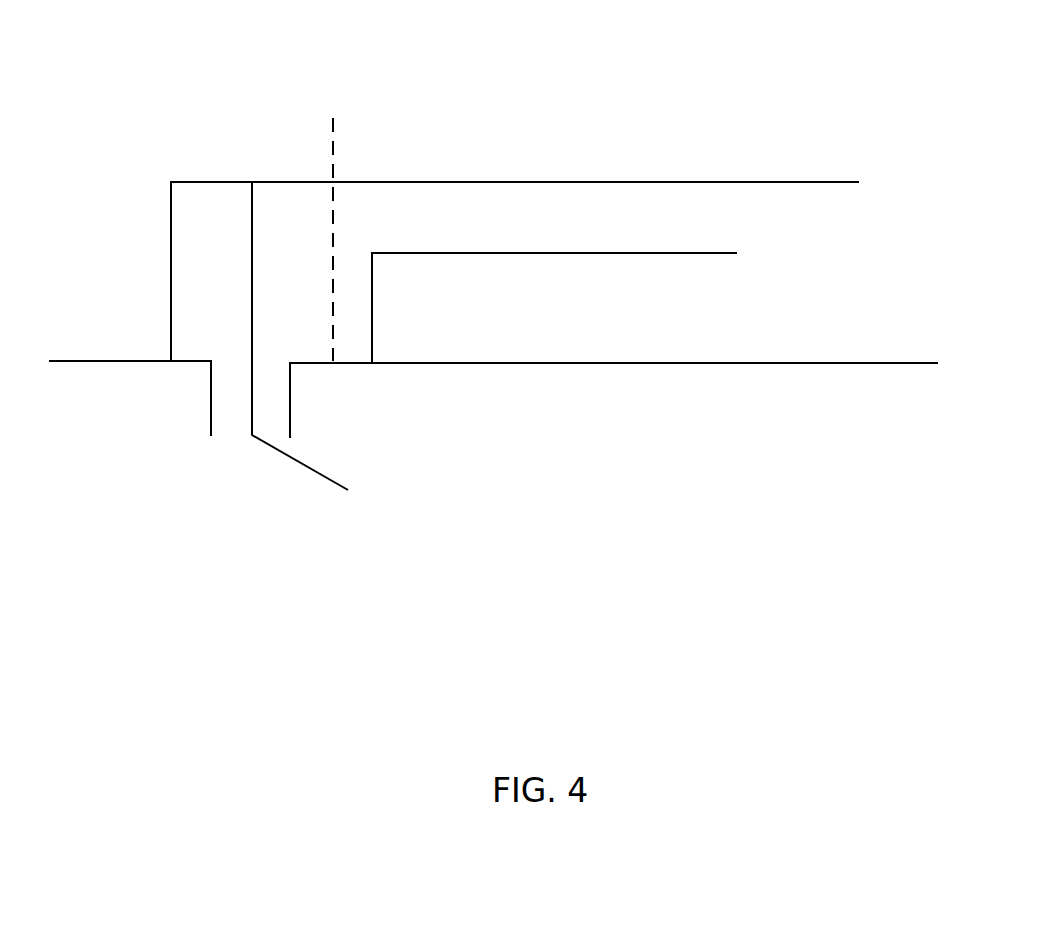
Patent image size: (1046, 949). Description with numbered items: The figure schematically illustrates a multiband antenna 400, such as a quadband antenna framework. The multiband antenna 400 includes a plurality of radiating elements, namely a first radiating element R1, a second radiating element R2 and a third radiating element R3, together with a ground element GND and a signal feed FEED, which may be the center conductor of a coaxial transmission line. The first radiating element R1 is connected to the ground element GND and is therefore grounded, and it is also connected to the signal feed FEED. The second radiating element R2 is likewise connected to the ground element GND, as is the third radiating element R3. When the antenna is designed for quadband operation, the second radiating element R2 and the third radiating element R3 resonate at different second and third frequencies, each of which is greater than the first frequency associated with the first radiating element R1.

The multiband antenna 400 is at (818, 115).
The first radiating element R1 is at (534, 265).
The second radiating element R2 is at (577, 302).
The third radiating element R3 is at (335, 221).
The signal feed FEED is at (346, 352).
The ground element GND is at (625, 363).